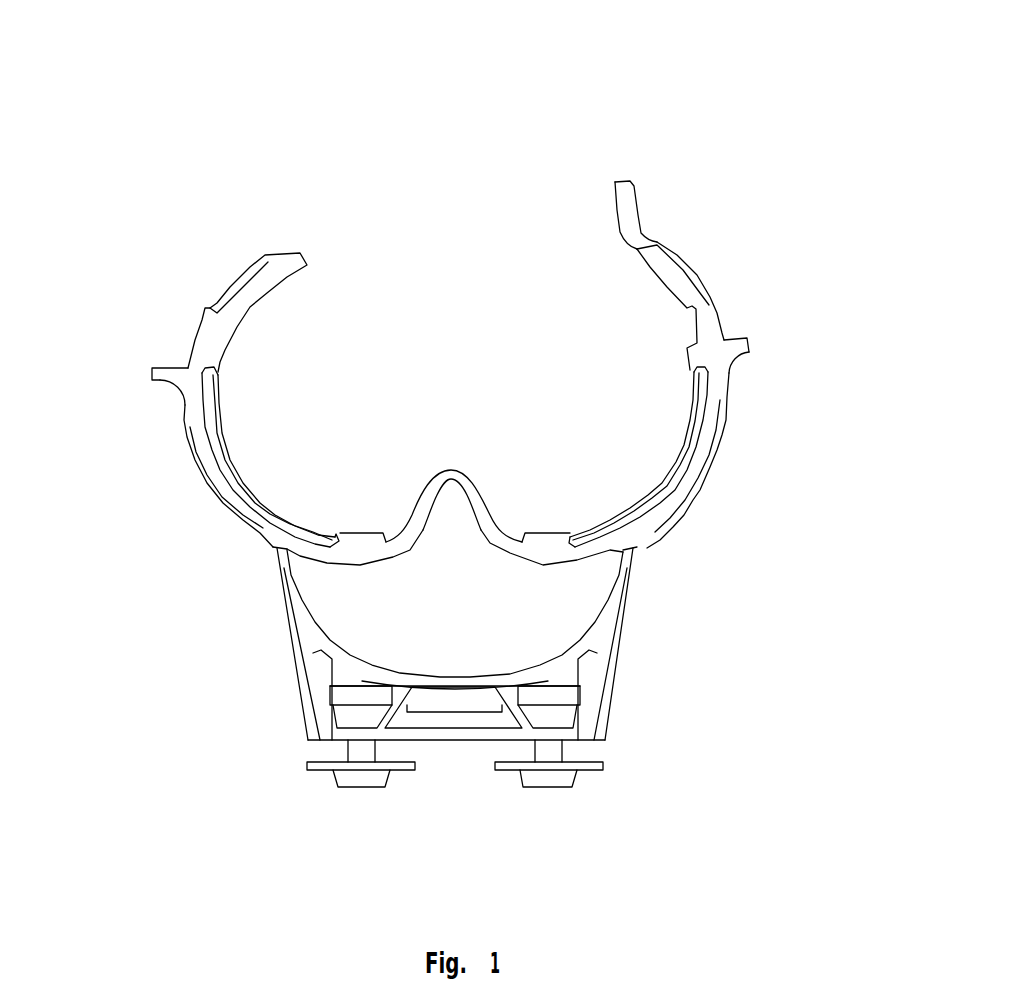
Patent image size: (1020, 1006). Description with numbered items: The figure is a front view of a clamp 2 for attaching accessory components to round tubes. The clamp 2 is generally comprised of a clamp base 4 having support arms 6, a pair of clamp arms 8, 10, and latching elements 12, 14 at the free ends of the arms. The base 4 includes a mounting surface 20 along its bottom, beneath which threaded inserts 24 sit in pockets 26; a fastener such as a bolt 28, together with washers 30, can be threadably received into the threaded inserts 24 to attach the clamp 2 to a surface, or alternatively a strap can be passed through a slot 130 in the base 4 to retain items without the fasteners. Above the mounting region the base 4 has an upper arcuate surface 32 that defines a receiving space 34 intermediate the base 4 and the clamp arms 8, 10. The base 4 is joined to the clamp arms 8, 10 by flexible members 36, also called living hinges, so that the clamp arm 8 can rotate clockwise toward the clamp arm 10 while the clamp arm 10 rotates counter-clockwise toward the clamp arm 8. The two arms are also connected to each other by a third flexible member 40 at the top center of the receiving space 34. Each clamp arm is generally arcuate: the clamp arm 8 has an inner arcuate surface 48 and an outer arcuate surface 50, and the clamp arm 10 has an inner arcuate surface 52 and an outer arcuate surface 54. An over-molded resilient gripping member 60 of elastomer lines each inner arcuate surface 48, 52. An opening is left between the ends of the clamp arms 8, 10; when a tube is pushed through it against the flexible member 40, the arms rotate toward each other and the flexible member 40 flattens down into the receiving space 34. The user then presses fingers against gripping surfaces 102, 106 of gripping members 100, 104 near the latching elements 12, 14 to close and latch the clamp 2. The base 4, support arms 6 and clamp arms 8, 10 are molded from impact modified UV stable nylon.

The clamp 2 is at (640, 105).
The clamp base 4 is at (507, 746).
The support arms 6 is at (303, 618).
The clamp arm 8 is at (181, 438).
The clamp arm 10 is at (733, 418).
The latching element 12 is at (291, 245).
The latching element 14 is at (690, 326).
The mounting surface 20 is at (440, 738).
The threaded inserts 24 is at (342, 695).
The pockets 26 is at (342, 673).
The bolt 28 is at (355, 780).
The washers 30 is at (592, 768).
The upper arcuate surface 32 is at (453, 670).
The receiving space 34 is at (533, 593).
The flexible members 36 is at (279, 562).
The third flexible member 40 is at (447, 465).
The inner arcuate surface 48 is at (250, 310).
The outer arcuate surface 50 is at (212, 492).
The inner arcuate surface 52 is at (547, 530).
The outer arcuate surface 54 is at (711, 469).
The resilient gripping member 60 is at (252, 473).
The gripping member 100 is at (150, 365).
The gripping surface 102 is at (168, 397).
The gripping member 104 is at (750, 330).
The gripping surface 106 is at (738, 368).
The slot 130 is at (453, 718).